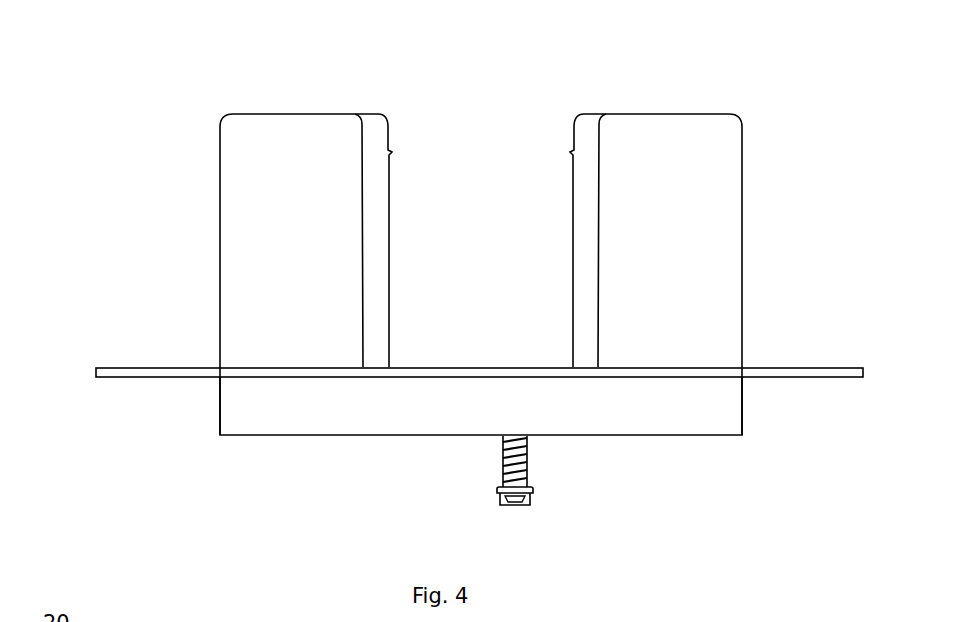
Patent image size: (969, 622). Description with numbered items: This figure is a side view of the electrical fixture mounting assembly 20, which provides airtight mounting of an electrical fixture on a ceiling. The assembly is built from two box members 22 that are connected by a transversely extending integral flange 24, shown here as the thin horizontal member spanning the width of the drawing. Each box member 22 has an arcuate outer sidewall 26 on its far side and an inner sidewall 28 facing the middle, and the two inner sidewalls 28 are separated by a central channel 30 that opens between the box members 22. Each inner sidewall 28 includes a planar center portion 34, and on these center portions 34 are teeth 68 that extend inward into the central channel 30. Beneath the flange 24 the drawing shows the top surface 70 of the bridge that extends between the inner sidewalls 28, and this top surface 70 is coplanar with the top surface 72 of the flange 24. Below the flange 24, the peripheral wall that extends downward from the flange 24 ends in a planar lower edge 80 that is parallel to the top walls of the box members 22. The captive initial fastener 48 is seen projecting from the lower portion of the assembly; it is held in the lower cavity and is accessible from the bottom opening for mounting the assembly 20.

The electrical fixture mounting assembly 20 is at (152, 166).
The box member 22 is at (220, 152).
The integral flange 24 is at (795, 378).
The arcuate outer sidewall 26 is at (458, 240).
The inner sidewall 28 is at (375, 310).
The central channel 30 is at (482, 147).
The planar center portion 34 is at (400, 241).
The captive initial fastener 48 is at (525, 470).
The teeth 68 is at (392, 152).
The top surface of the bridge 70 is at (466, 356).
The top surface of the flange 72 is at (818, 358).
The planar lower edge 80 is at (645, 435).